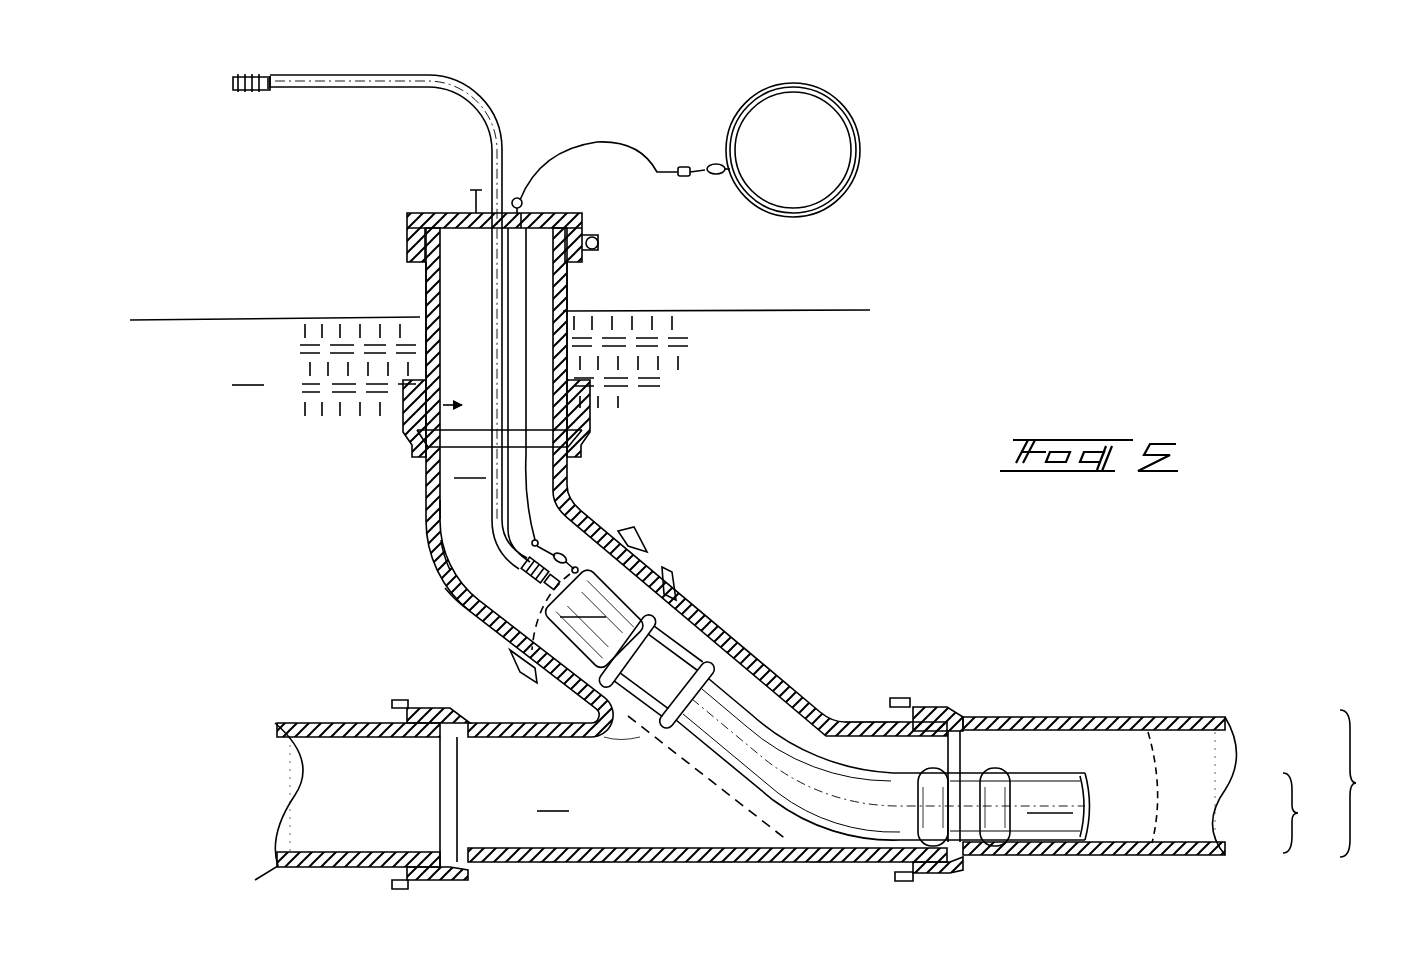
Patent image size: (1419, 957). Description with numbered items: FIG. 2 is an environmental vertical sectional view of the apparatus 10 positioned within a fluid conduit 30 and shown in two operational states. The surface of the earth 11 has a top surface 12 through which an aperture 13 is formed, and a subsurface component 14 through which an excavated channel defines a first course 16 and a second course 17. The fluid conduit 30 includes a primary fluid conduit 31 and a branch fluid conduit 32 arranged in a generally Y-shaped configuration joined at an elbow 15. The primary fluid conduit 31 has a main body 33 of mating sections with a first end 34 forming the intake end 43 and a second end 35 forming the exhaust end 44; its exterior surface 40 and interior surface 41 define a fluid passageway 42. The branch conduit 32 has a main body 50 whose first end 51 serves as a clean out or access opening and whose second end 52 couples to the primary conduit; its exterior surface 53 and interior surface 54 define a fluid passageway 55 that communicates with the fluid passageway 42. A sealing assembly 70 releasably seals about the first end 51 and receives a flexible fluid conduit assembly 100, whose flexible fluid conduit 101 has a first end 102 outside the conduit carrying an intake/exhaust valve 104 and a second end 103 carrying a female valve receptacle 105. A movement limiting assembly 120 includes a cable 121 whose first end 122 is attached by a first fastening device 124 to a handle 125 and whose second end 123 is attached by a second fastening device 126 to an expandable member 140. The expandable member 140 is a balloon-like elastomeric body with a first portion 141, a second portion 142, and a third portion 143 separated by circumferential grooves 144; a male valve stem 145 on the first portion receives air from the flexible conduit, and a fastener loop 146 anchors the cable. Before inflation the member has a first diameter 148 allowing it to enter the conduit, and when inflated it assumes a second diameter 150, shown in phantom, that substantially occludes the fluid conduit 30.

The apparatus 10 is at (833, 830).
The surface of the earth 11 is at (752, 311).
The top surface 12 is at (250, 317).
The aperture 13 is at (418, 317).
The subsurface component 14 is at (249, 372).
The elbow 15 is at (482, 616).
The first course 16 is at (698, 454).
The second course 17 is at (540, 866).
The fluid conduit 30 is at (675, 568).
The primary fluid conduit 31 is at (722, 864).
The secondary fluid conduit 32 is at (584, 440).
The main body 33 is at (597, 863).
The first end 34 is at (285, 862).
The second end 35 is at (1227, 722).
The exterior surface 40 is at (512, 716).
The interior surface 41 is at (518, 738).
The fluid passageway 42 is at (554, 798).
The intake end 43 is at (296, 782).
The exhaust end 44 is at (1224, 794).
The main body 50 is at (426, 486).
The first end 51 is at (425, 216).
The second end 52 is at (804, 699).
The exterior surface 53 is at (443, 558).
The interior surface 54 is at (440, 526).
The fluid passageway 55 is at (499, 454).
The sealing assembly 70 is at (426, 205).
The flexible fluid conduit assembly 100 is at (398, 403).
The flexible fluid conduit 101 is at (470, 100).
The first end 102 is at (300, 90).
The second end 103 is at (497, 545).
The intake/exhaust valve 104 is at (233, 85).
The female valve receptacle 105 is at (523, 575).
The movement limiting assembly 120 is at (558, 100).
The cable 121 is at (528, 308).
The first end 122 is at (618, 140).
The second end 123 is at (520, 492).
The first fastening device 124 is at (700, 176).
The handle 125 is at (845, 190).
The second fastening device 126 is at (565, 548).
The expandable member 140 is at (818, 786).
The first portion 141 is at (594, 619).
The second portion 142 is at (723, 783).
The third portion 143 is at (1058, 806).
The circumferential grooves 144 is at (626, 531).
The male valve stem 145 is at (522, 668).
The fastener loop 146 is at (662, 626).
The first diameter 148 is at (1312, 813).
The second diameter 150 is at (1374, 783).